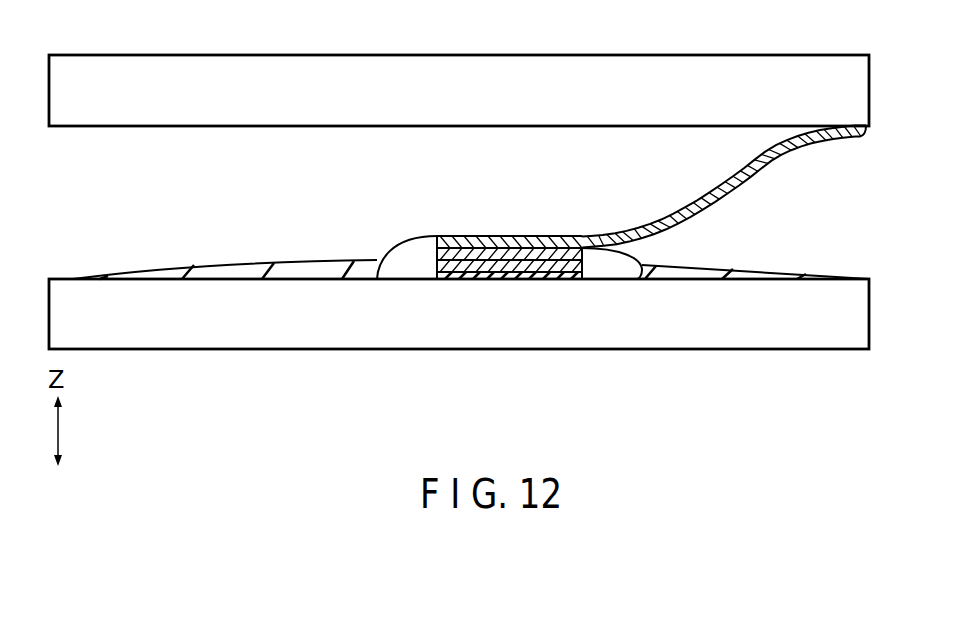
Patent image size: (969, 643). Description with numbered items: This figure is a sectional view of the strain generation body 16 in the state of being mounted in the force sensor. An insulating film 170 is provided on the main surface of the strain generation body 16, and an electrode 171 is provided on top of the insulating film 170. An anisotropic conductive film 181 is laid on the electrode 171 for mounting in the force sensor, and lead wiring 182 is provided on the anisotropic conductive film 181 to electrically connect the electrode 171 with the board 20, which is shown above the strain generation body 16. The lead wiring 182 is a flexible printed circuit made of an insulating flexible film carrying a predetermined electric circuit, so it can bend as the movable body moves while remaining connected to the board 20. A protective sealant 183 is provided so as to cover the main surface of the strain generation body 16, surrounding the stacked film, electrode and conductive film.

The board 20 is at (708, 59).
The strain generation body 16 is at (735, 360).
The insulating film 170 is at (473, 280).
The electrode 171 is at (558, 280).
The anisotropic conductive film 181 is at (557, 253).
The lead wiring 182 is at (757, 182).
The protective sealant 183 is at (303, 272).